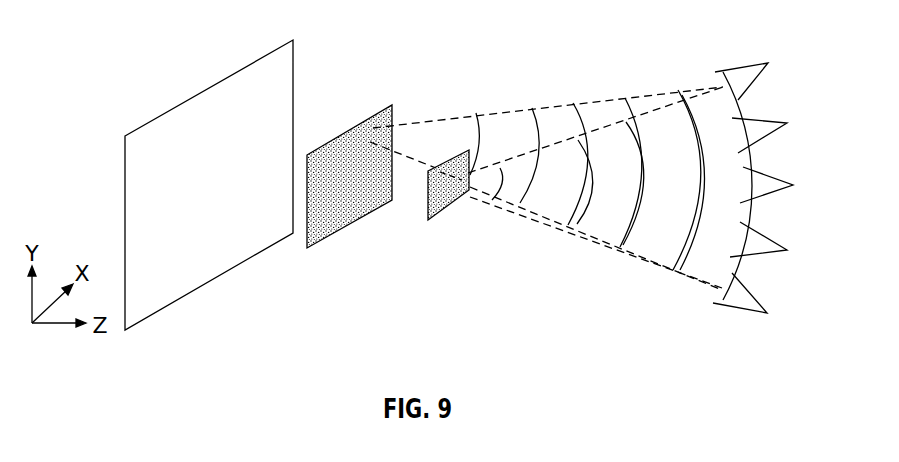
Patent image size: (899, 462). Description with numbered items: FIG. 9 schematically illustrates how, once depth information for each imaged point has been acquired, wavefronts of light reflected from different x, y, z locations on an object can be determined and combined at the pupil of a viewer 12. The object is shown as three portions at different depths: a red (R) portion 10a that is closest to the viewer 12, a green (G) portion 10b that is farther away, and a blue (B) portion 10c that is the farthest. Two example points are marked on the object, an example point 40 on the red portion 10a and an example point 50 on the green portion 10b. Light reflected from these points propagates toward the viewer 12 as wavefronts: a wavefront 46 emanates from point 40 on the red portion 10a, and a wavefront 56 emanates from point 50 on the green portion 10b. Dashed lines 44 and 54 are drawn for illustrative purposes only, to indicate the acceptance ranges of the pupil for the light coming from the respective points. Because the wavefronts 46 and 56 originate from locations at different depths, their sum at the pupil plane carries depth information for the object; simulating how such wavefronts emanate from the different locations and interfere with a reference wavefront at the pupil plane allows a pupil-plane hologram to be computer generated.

The blue portion 10c is at (210, 88).
The green portion 10b is at (355, 225).
The red portion 10a is at (433, 222).
The example point 50 is at (349, 124).
The example point 40 is at (452, 188).
The dashed line 54 is at (502, 108).
The wavefront 56 is at (595, 102).
The wavefront 46 is at (589, 183).
The dashed line 44 is at (645, 108).
The viewer 12 is at (782, 36).